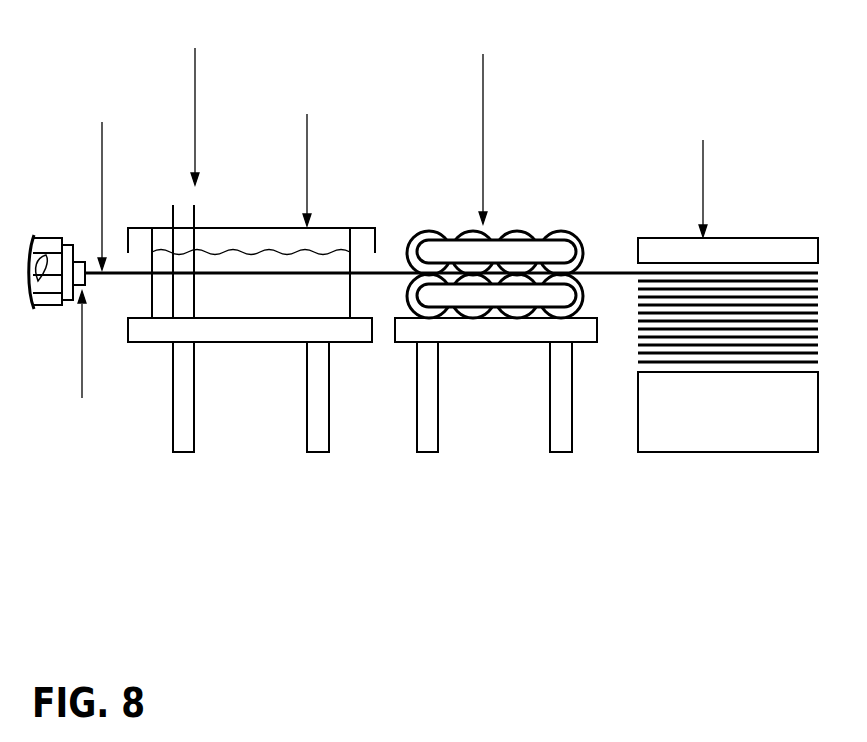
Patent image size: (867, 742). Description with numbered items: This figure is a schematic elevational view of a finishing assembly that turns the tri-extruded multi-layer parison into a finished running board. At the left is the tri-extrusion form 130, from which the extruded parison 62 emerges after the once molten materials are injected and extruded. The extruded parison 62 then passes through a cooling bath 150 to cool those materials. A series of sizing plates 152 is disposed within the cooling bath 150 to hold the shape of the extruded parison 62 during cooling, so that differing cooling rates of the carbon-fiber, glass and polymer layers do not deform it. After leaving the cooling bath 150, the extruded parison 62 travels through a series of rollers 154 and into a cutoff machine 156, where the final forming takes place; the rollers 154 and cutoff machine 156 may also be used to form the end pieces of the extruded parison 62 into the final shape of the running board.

The tri-extrusion form 130 is at (50, 238).
The extruded parison 62 is at (97, 282).
The cooling bath 150 is at (324, 240).
The sizing plates 152 is at (197, 218).
The rollers 154 is at (517, 223).
The cutoff machine 156 is at (733, 237).